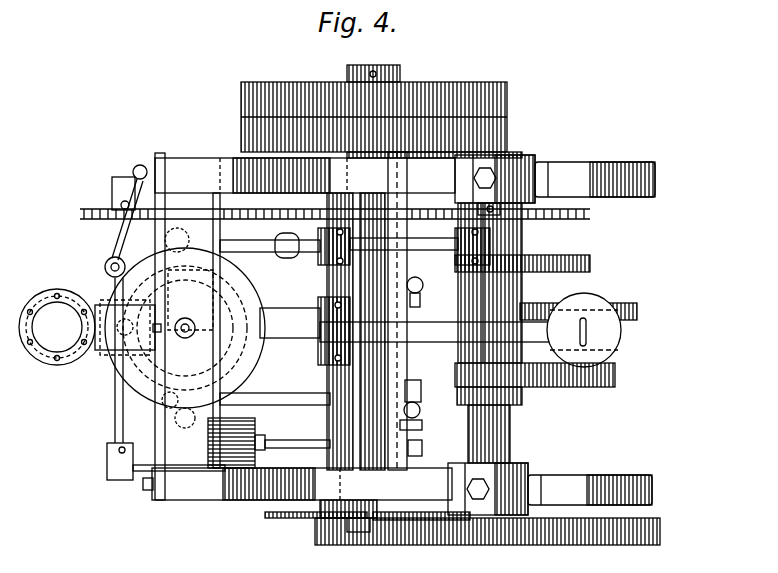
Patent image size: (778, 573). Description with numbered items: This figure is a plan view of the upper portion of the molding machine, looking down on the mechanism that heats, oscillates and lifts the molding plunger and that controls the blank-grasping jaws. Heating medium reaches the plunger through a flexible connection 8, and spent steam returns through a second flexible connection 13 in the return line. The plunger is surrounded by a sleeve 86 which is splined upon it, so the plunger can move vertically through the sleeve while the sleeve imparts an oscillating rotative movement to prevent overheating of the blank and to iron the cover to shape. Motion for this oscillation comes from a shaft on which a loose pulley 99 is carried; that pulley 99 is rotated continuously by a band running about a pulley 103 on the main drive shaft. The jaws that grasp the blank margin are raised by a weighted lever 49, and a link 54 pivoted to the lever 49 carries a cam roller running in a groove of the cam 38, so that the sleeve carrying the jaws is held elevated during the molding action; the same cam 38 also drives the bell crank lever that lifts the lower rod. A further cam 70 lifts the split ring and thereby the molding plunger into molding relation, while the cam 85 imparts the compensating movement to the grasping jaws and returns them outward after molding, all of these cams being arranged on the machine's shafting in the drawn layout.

The flexible connection 8 is at (273, 313).
The flexible connection 13 is at (289, 352).
The cam 38 is at (523, 318).
The lever 49 is at (615, 331).
The link 54 is at (556, 306).
The cam 70 is at (603, 389).
The cam 85 is at (583, 256).
The sleeve 86 is at (290, 254).
The pulley 99 is at (389, 519).
The pulley 103 is at (279, 519).